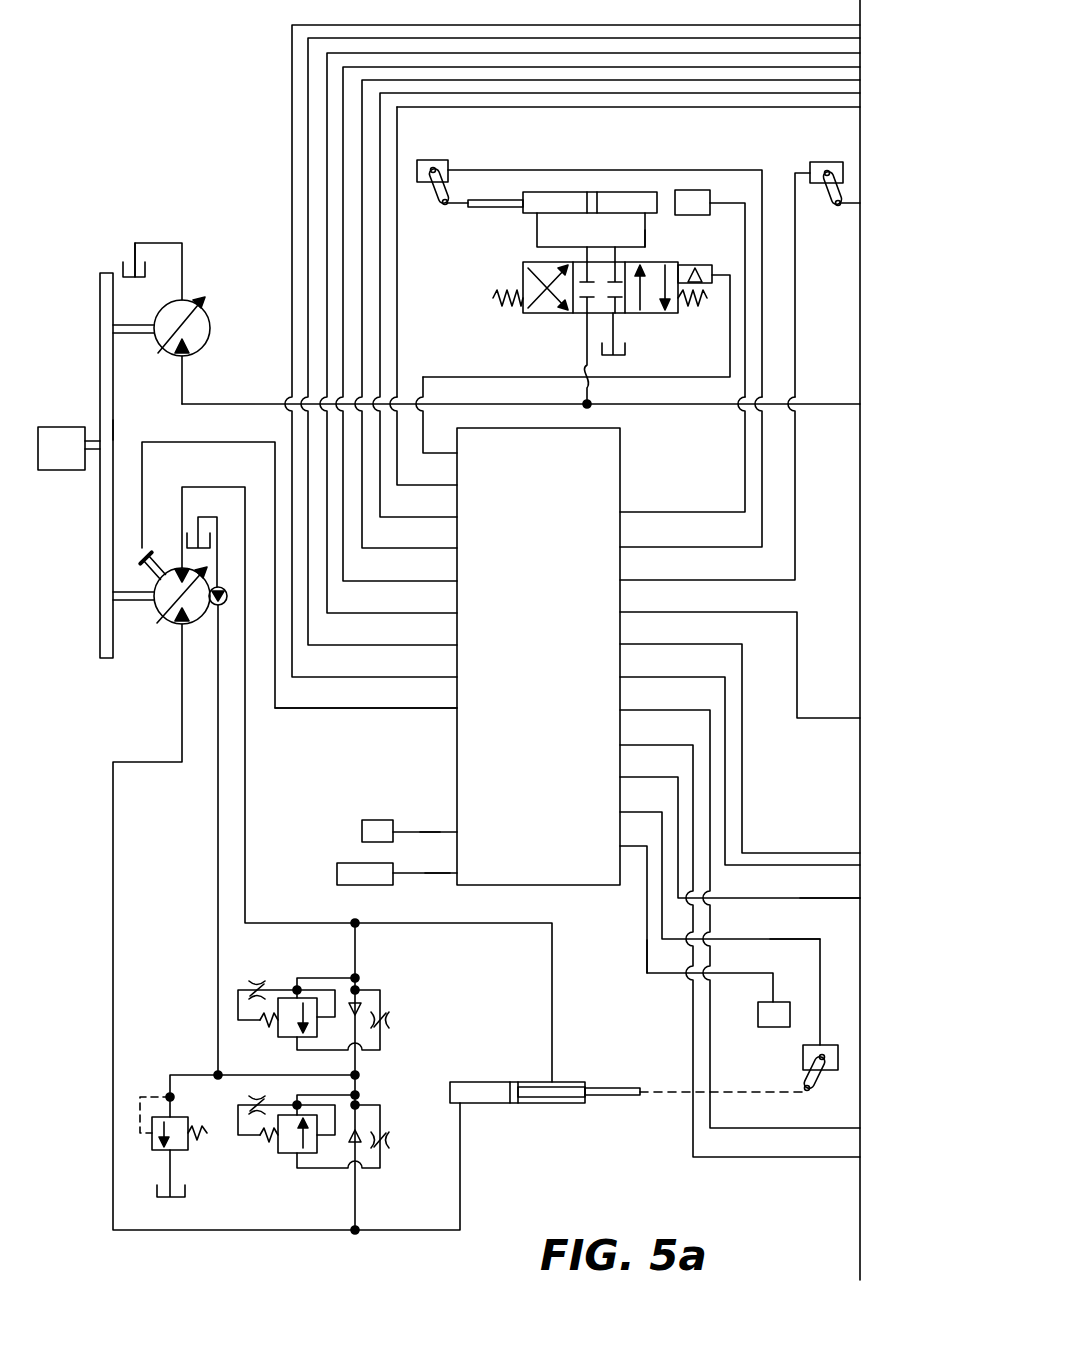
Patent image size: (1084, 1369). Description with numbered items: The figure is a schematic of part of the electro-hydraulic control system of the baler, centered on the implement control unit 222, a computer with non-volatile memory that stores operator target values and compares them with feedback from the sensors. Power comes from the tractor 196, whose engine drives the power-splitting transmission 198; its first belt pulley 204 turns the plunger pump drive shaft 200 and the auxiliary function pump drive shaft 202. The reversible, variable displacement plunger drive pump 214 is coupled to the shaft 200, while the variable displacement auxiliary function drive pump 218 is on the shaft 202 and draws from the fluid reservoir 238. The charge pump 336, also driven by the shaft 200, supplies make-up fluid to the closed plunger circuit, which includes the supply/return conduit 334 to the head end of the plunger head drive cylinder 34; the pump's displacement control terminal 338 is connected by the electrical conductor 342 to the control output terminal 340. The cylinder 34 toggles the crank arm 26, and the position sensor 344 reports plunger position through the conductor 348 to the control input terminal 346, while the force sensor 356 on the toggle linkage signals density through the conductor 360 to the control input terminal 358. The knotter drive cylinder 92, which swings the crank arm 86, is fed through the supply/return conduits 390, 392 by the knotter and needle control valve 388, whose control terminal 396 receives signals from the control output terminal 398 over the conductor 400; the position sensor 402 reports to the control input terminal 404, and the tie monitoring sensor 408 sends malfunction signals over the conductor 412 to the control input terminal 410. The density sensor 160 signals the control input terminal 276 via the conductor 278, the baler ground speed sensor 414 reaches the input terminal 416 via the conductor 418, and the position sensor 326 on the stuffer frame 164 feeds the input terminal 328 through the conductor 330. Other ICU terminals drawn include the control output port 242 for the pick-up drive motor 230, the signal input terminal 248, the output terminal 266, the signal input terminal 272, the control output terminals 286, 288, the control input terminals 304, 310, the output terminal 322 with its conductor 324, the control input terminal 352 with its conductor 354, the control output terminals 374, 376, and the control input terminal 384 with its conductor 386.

The second link or crank arm 26 is at (818, 1082).
The hydraulic plunger head drive cylinder 34 is at (487, 1082).
The crank arm 86 is at (440, 198).
The hydraulic knotter drive cylinder 92 is at (525, 200).
The density sensor 160 is at (340, 863).
The frame 164 is at (818, 212).
The tractor 196 is at (55, 427).
The power-splitting transmission 198 is at (96, 334).
The plunger pump drive shaft 200 is at (126, 590).
The auxiliary function pump drive shaft 202 is at (130, 335).
The first belt pulley 204 is at (113, 428).
The plunger drive pump 214 is at (203, 621).
The auxiliary function drive pump 218 is at (210, 335).
The implement control unit 222 is at (620, 430).
The reversible hydraulic pick-up drive motor 230 is at (178, 1197).
The fluid reservoir 238 is at (123, 262).
The control output port 242 is at (458, 517).
The signal input terminal 248 is at (620, 612).
The output terminal 266 is at (458, 645).
The signal input terminal 272 is at (620, 745).
The control input terminal 276 is at (458, 873).
The conductor 278 is at (440, 878).
The control output terminal 286 is at (458, 581).
The control output terminal 288 is at (458, 548).
The control input terminal 304 is at (620, 677).
The control input terminal 310 is at (620, 644).
The output terminal 322 is at (458, 485).
The conductor 324 is at (397, 303).
The position sensor 326 is at (835, 160).
The input terminal 328 is at (620, 580).
The conductor 330 is at (802, 353).
The supply/return conduit 334 is at (370, 1230).
The charge pump 336 is at (225, 607).
The displacement control terminal 338 is at (140, 548).
The control output terminal 340 is at (458, 708).
The electrical conductor 342 is at (353, 712).
The position sensor 344 is at (803, 1053).
The control input terminal 346 is at (620, 812).
The conductor 348 is at (803, 940).
The control input terminal 352 is at (620, 777).
The conductor 354 is at (846, 899).
The force sensor 356 is at (778, 1027).
The control input terminal 358 is at (620, 846).
The conductor 360 is at (647, 950).
The control output terminal 374 is at (458, 613).
The control output terminal 376 is at (458, 677).
The control input terminal 384 is at (620, 710).
The conductor 386 is at (740, 172).
The knotter and needle control valve 388 is at (557, 317).
The supply/return conduit 390 is at (537, 222).
The supply/return conduit 392 is at (645, 232).
The control terminal 396 is at (724, 287).
The control output terminal 398 is at (458, 453).
The conductor 400 is at (720, 375).
The position sensor 402 is at (427, 160).
The control input terminal 404 is at (620, 547).
The tie monitoring sensor 408 is at (725, 215).
The control input terminal 410 is at (620, 512).
The conductor 412 is at (745, 487).
The baler ground speed sensor 414 is at (385, 820).
The input terminal 416 is at (458, 832).
The conductor 418 is at (430, 832).